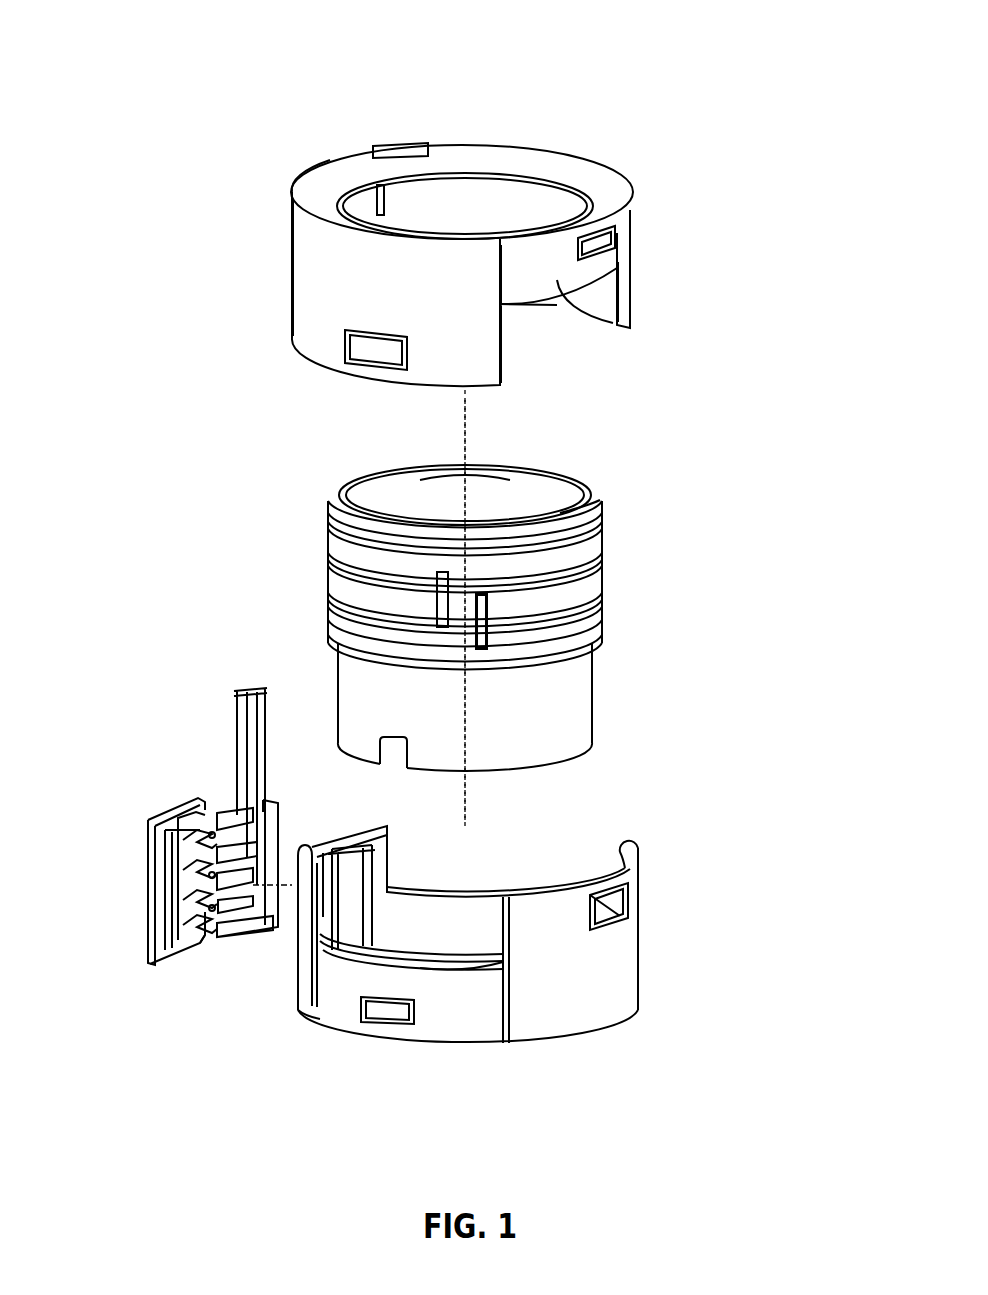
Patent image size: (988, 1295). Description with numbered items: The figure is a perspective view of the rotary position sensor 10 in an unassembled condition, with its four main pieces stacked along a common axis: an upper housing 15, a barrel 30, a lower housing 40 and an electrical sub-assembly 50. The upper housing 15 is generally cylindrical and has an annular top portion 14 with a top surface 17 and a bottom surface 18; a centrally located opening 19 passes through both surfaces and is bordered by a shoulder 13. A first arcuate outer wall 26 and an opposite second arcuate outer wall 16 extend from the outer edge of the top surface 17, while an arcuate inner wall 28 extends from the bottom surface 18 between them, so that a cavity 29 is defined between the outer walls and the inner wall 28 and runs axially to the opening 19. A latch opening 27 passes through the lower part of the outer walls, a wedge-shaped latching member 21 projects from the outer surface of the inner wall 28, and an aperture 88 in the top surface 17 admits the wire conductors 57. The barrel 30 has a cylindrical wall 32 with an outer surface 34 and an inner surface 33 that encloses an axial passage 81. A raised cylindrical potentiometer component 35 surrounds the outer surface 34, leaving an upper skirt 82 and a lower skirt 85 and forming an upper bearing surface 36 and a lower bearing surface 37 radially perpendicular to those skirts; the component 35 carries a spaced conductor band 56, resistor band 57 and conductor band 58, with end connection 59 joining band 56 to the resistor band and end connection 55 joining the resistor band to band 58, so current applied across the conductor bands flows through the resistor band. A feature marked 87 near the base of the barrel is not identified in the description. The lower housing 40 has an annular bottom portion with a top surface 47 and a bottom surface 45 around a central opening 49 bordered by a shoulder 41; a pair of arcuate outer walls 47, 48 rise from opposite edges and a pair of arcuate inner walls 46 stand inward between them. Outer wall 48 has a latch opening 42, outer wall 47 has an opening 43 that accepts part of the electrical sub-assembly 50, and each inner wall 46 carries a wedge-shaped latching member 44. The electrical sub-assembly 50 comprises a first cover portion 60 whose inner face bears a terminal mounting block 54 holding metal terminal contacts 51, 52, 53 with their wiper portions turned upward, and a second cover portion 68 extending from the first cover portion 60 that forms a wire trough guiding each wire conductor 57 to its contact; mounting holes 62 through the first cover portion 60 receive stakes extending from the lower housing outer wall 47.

The rotary position sensor 10 is at (348, 70).
The shoulder 13 is at (524, 173).
The annular top portion 14 is at (343, 157).
The upper housing 15 is at (657, 98).
The second arcuate outer wall 16 is at (630, 290).
The top surface 17 is at (312, 187).
The bottom surface 18 is at (628, 216).
The opening 19 is at (452, 158).
The wedge shaped latching member 21 is at (612, 240).
The first arcuate outer wall 26 is at (314, 268).
The latch opening 27 is at (370, 353).
The arcuate inner wall 28 is at (560, 280).
The cavity 29 is at (536, 333).
The barrel 30 is at (646, 441).
The cylindrical wall 32 is at (357, 488).
The inner surface 33 is at (462, 475).
The outer surface 34 is at (578, 672).
The potentiometer component 35 is at (323, 556).
The upper bearing surface 36 is at (343, 512).
The lower bearing surface 37 is at (372, 660).
The lower housing 40 is at (659, 792).
The shoulder 41 is at (423, 952).
The latch opening 42 is at (630, 905).
The opening 43 is at (352, 857).
The wedge shaped latching member 44 is at (378, 1013).
The bottom surface 45 is at (560, 1043).
The arcuate inner walls 46 is at (530, 888).
The arcuate outer wall 47 is at (388, 851).
The arcuate outer wall 48 is at (630, 972).
The opening 49 is at (470, 954).
The electrical sub-assembly 50 is at (173, 733).
The terminal contact 51 is at (190, 877).
The terminal contact 52 is at (193, 838).
The terminal contact 53 is at (205, 945).
The terminal mounting block 54 is at (178, 862).
The end connection 55 is at (487, 647).
The conductor band 56 is at (603, 548).
The resistor band 57 is at (603, 583).
The conductor band 58 is at (603, 625).
The end connection 59 is at (437, 585).
The first cover portion 60 is at (148, 928).
The mounting holes 62 is at (177, 815).
The second cover portion 68 is at (266, 935).
The passage 81 is at (480, 494).
The upper skirt 82 is at (599, 494).
The lower skirt 85 is at (596, 738).
The key notch 87 is at (403, 762).
The aperture 88 is at (403, 147).